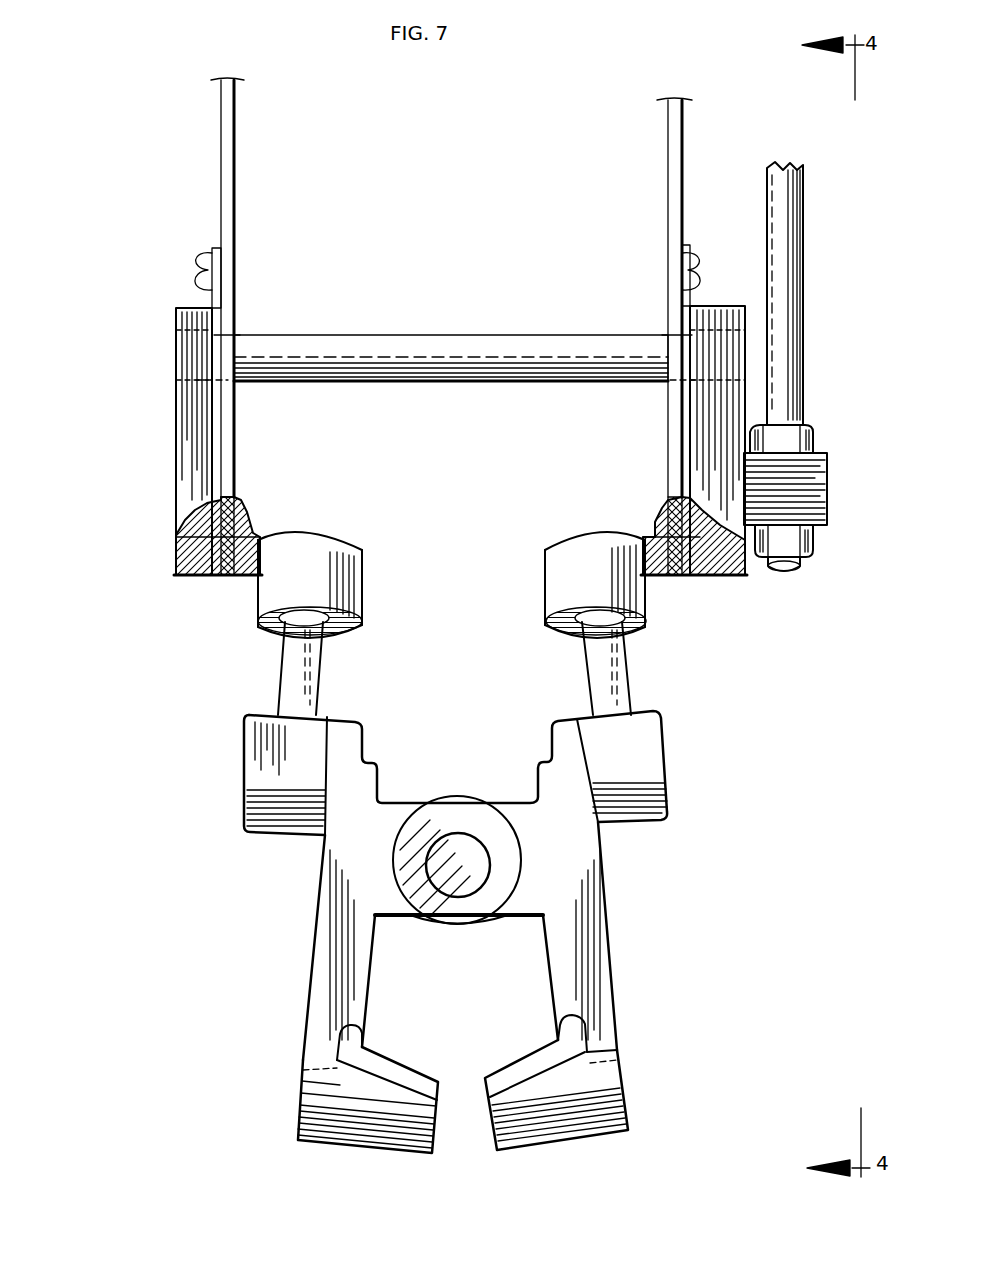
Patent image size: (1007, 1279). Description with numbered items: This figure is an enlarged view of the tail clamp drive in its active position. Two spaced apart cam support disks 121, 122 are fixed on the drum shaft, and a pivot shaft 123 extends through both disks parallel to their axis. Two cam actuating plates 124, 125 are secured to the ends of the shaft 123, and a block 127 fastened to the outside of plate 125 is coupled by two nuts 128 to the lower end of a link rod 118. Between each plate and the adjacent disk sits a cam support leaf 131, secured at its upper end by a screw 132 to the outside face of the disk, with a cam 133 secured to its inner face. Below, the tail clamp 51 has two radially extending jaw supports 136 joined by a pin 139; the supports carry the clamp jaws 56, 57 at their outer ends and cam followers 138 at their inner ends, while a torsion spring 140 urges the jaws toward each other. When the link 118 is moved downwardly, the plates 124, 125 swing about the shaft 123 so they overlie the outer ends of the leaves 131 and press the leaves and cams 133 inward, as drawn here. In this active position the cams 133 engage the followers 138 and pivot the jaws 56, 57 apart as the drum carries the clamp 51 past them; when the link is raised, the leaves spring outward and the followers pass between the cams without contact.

The tail clamp 51 is at (648, 935).
The clamp jaw 56 is at (327, 1127).
The clamp jaw 57 is at (545, 1117).
The link rod 118 is at (803, 228).
The cam support disk 121 is at (228, 125).
The cam support disk 122 is at (668, 140).
The pivot shaft 123 is at (388, 338).
The cam actuating plate 124 is at (180, 430).
The cam actuating plate 125 is at (730, 400).
The block 127 is at (820, 465).
The nut 128 is at (790, 437).
The cam support leaf 131 is at (215, 458).
The screw 132 is at (205, 268).
The cam 133 is at (240, 578).
The jaw support 136 is at (322, 933).
The cam follower 138 is at (545, 548).
The pin 139 is at (450, 900).
The torsion spring 140 is at (437, 798).